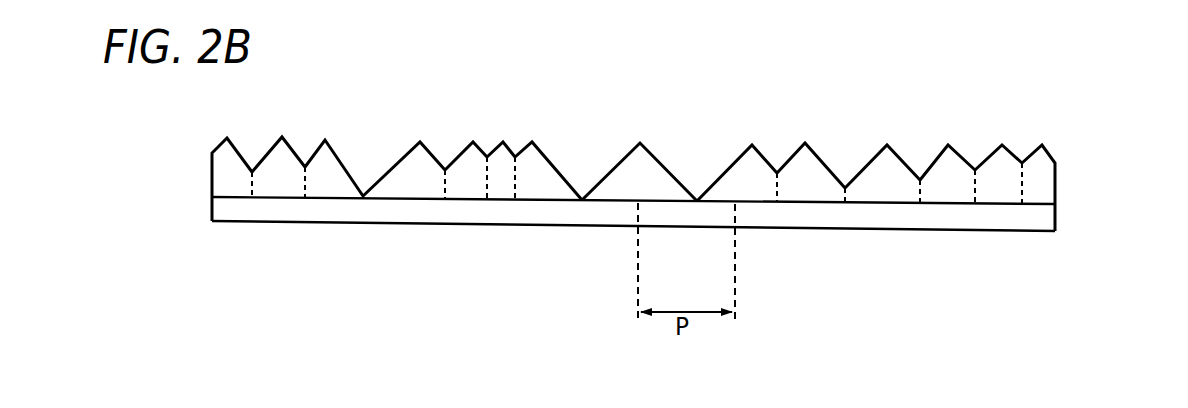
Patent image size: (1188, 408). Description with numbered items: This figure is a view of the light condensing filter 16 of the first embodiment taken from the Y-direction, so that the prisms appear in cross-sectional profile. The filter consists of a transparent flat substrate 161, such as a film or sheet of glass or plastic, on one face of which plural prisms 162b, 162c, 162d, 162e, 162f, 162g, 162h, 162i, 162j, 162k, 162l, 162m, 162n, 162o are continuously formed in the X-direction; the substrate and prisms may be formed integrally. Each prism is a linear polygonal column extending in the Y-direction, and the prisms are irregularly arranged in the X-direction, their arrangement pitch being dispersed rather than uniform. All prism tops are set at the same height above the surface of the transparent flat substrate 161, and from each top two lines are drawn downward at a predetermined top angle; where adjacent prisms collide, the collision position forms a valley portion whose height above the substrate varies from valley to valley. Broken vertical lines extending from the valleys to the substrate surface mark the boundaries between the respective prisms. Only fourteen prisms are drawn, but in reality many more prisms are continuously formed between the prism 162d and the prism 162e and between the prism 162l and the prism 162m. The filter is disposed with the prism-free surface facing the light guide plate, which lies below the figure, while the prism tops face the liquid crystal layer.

The light condensing filter 16 is at (1098, 172).
The transparent flat substrate 161 is at (1047, 220).
The prism 162b is at (230, 183).
The prism 162c is at (272, 183).
The prism 162d is at (322, 183).
The prism 162e is at (405, 183).
The prism 162f is at (468, 183).
The prism 162g is at (500, 183).
The prism 162h is at (542, 183).
The prism 162i is at (655, 183).
The prism 162j is at (757, 183).
The prism 162k is at (813, 183).
The prism 162l is at (883, 183).
The prism 162m is at (945, 183).
The prism 162n is at (998, 183).
The prism 162o is at (1043, 183).